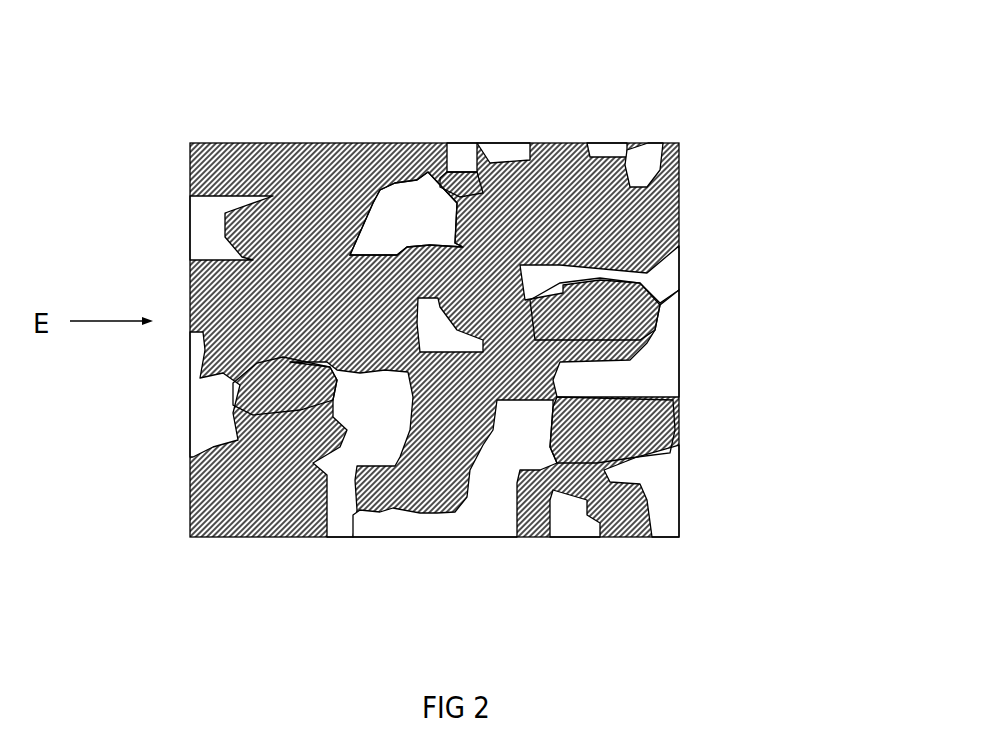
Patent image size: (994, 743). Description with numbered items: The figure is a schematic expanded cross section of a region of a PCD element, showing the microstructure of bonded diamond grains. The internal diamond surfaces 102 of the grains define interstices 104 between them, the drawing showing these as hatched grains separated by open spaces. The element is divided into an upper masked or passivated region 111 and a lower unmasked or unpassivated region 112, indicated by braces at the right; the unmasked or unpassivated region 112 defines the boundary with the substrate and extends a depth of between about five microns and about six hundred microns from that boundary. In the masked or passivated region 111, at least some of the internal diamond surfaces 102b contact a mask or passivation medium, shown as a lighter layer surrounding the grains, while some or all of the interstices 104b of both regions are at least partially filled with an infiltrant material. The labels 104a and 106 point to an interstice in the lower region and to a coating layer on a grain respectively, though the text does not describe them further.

The internal diamond surfaces 102 is at (633, 458).
The internal diamond surfaces of the masked or passivated region 102b is at (475, 193).
The interstices 104 is at (520, 443).
The second particle core 104a is at (367, 425).
The interstices of the masked or passivated region 104b is at (415, 215).
The coating layer 106 is at (655, 306).
The masked or passivated region 111 is at (819, 133).
The unmasked or unpassivated region 112 is at (819, 353).